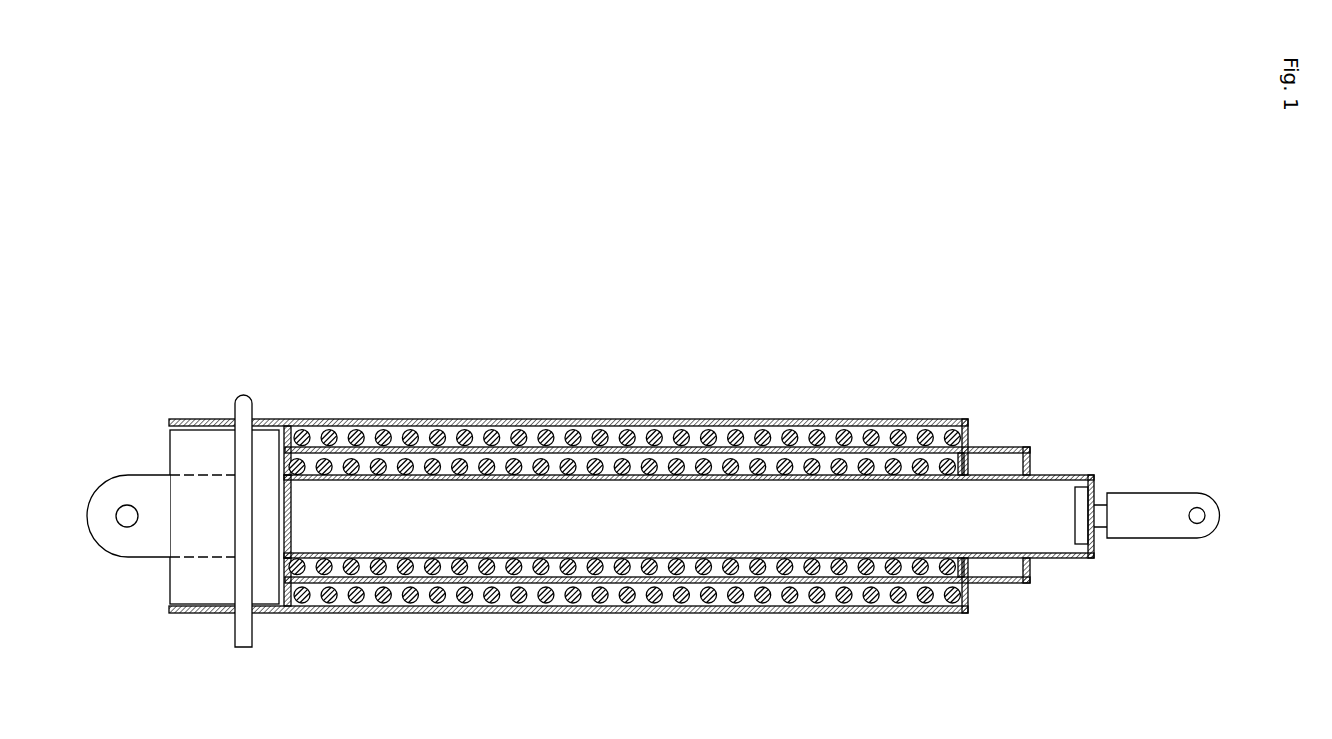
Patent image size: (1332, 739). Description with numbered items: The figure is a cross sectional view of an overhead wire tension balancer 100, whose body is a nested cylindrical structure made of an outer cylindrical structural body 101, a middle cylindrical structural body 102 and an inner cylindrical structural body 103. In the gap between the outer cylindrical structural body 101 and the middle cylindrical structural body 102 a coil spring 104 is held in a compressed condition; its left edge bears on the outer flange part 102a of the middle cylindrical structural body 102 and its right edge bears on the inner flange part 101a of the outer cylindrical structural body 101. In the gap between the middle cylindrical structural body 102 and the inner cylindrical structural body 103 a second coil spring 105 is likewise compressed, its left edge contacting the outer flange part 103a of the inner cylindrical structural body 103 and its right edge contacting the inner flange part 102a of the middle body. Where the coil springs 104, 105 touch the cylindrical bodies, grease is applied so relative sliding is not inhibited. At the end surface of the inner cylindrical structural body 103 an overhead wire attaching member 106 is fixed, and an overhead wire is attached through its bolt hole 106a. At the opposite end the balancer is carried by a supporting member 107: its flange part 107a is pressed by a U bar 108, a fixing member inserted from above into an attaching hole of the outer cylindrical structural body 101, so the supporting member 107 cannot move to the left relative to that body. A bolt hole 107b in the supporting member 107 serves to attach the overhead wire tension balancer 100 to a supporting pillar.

The overhead wire tension balancer 100 is at (485, 380).
The outer cylindrical structural body 101 is at (581, 482).
The inner flange part of the outer cylindrical structural body 101a is at (970, 430).
The middle cylindrical structural body 102 is at (664, 483).
The flange part of the middle cylindrical structural body 102a is at (288, 432).
The inner cylindrical structural body 103 is at (629, 463).
The outer flange part of the inner cylindrical structural body 103a is at (280, 468).
The coil spring 104 is at (570, 442).
The coil spring 105 is at (643, 467).
The overhead wire attaching member 106 is at (1161, 523).
The bolt hole 106a is at (1195, 515).
The supporting member 107 is at (183, 540).
The flange part of the supporting member 107a is at (262, 515).
The bolt hole 107b is at (123, 523).
The U bar 108 is at (245, 400).